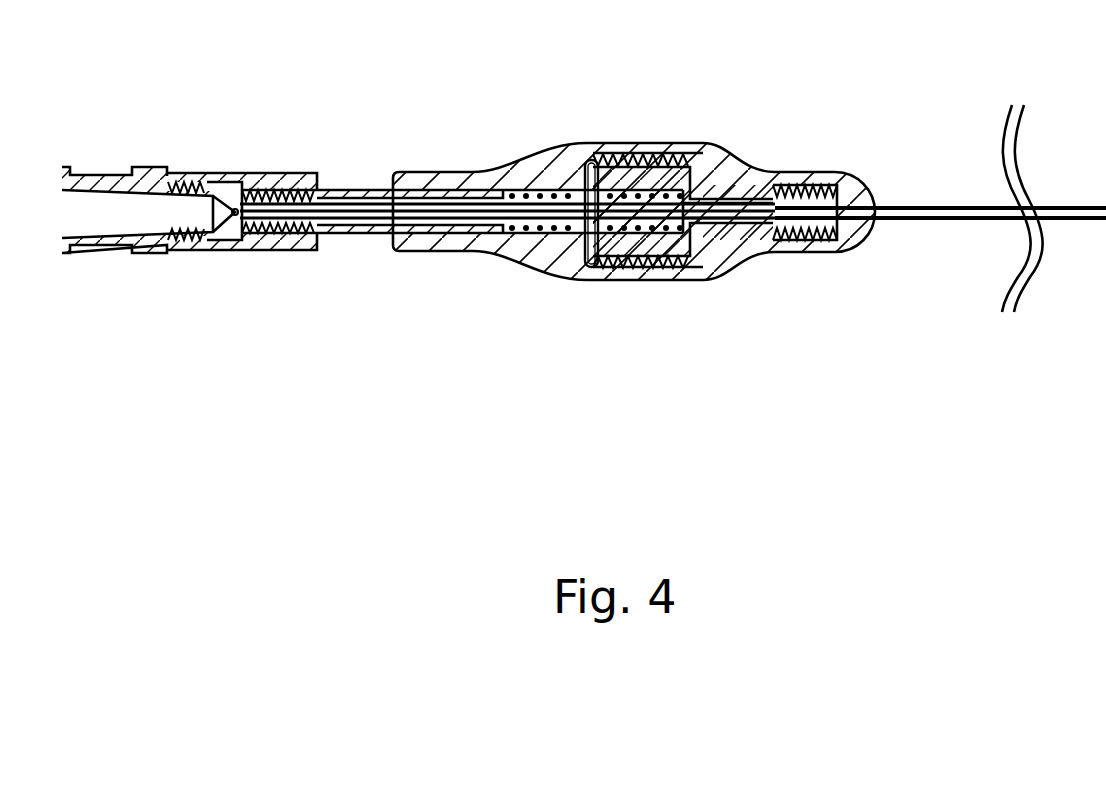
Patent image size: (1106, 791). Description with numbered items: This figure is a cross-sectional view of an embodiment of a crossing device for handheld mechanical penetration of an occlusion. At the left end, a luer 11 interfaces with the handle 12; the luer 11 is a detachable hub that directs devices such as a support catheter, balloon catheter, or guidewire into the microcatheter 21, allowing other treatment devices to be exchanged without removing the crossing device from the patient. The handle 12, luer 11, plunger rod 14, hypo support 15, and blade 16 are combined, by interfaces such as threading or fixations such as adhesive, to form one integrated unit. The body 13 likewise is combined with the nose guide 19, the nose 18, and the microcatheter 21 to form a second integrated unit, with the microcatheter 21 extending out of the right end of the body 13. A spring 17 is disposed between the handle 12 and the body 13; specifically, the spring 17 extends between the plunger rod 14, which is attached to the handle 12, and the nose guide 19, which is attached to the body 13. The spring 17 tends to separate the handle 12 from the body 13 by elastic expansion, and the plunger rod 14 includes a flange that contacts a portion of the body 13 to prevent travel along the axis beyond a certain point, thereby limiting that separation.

The luer 11 is at (102, 173).
The handle 12 is at (234, 172).
The body 13 is at (512, 168).
The plunger rod 14 is at (345, 183).
The hypo support 15 is at (645, 228).
The blade 16 is at (340, 226).
The spring 17 is at (545, 235).
The nose 18 is at (860, 173).
The nose guide 19 is at (755, 155).
The microcatheter 21 is at (911, 200).